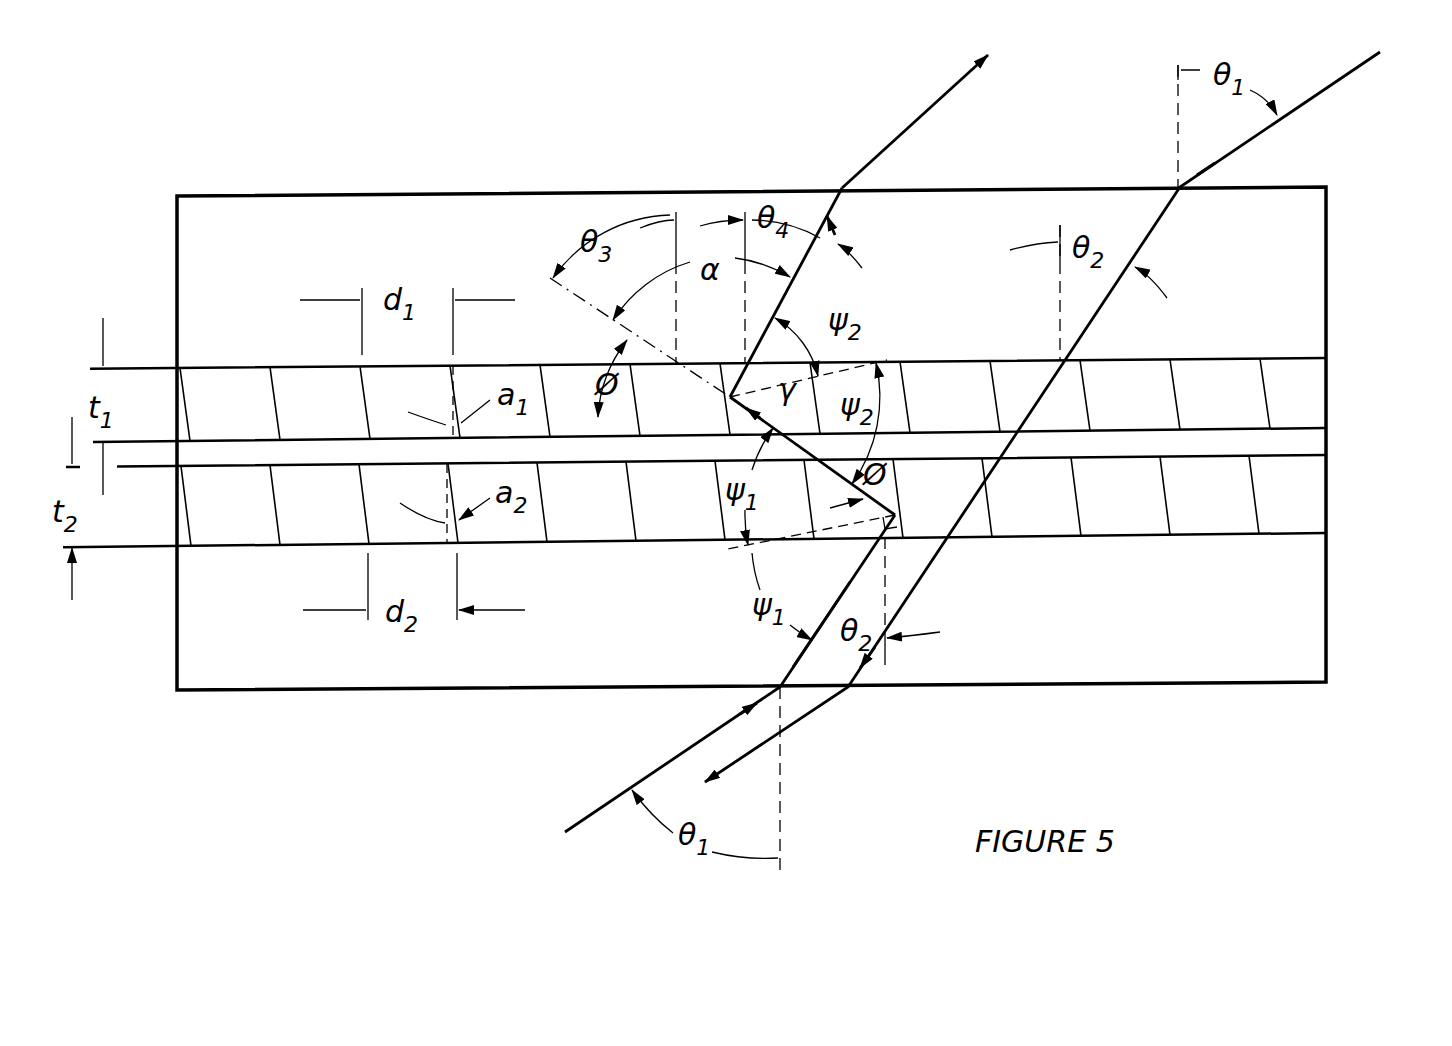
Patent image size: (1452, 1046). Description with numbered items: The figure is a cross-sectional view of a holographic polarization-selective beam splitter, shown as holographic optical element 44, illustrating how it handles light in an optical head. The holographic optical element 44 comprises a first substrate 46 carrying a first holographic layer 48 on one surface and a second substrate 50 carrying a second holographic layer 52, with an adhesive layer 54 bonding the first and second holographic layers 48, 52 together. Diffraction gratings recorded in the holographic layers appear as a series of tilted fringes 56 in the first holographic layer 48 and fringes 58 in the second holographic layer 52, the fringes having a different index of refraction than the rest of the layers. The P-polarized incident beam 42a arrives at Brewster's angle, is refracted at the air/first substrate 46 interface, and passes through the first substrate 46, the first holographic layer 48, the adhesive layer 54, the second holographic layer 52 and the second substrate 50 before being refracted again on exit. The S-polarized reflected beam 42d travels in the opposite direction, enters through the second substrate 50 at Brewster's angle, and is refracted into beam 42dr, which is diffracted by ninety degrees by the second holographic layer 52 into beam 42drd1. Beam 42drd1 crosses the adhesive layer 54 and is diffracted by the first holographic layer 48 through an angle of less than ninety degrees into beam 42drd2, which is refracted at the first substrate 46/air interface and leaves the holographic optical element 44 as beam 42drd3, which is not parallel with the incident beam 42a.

The polarized incident beam 42a is at (1320, 92).
The S-polarized reflected beam 42d is at (608, 802).
The refracted beam 42dr is at (793, 667).
The first diffracted beam 42drd1 is at (750, 413).
The second diffracted beam 42drd2 is at (803, 263).
The exiting beam 42drd3 is at (923, 116).
The holographic optical element 44 is at (1350, 184).
The first substrate 46 is at (1328, 262).
The first holographic layer 48 is at (1328, 384).
The second substrate 50 is at (1328, 601).
The second holographic layer 52 is at (1328, 494).
The adhesive layer 54 is at (1328, 444).
The fringes 56 is at (1175, 378).
The fringes 58 is at (1167, 507).